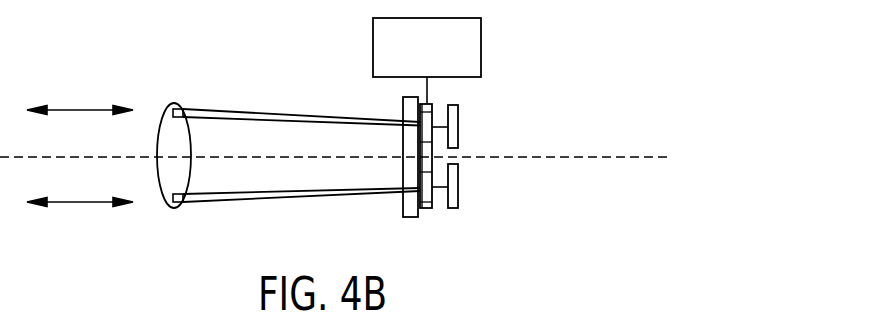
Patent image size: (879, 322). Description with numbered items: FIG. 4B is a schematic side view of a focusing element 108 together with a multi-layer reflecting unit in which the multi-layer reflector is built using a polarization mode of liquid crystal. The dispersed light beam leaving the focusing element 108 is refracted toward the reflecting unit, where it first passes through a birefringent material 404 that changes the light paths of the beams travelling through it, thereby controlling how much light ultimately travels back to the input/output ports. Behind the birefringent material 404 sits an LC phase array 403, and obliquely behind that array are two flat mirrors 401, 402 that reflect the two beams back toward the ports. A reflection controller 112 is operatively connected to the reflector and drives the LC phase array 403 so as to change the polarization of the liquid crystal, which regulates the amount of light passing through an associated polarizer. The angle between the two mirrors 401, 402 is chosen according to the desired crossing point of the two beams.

The focusing element 108 is at (173, 103).
The reflection controller 112 is at (482, 32).
The flat mirror 401 is at (459, 113).
The flat mirror 402 is at (459, 200).
The LC phase array 403 is at (433, 107).
The birefringent material 404 is at (403, 104).